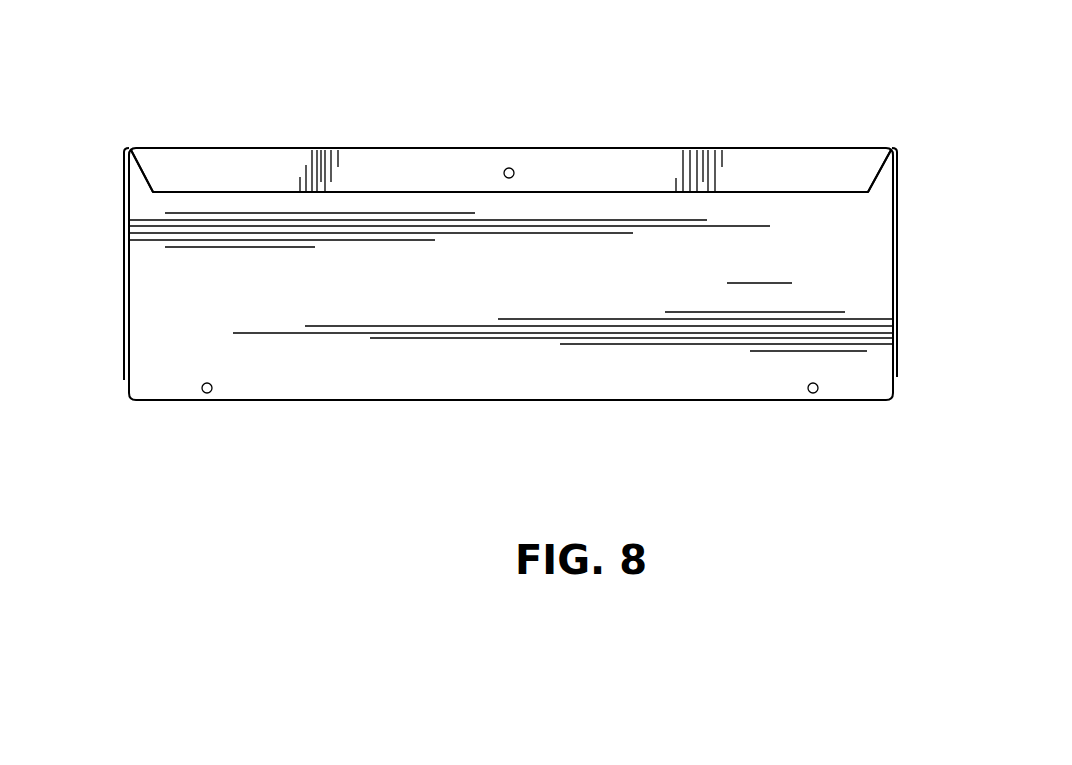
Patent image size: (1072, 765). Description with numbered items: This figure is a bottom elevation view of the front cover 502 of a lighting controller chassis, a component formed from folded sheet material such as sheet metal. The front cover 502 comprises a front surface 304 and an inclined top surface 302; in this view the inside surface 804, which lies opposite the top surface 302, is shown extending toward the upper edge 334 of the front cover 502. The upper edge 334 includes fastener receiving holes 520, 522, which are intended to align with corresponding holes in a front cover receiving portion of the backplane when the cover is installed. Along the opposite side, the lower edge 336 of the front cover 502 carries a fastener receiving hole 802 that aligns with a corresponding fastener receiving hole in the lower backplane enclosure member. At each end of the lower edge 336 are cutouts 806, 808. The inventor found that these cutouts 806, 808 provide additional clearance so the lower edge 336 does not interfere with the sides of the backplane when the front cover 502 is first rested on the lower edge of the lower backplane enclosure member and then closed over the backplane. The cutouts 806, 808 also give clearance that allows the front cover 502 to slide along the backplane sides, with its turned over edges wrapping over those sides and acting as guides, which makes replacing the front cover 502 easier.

The inclined top surface 302 is at (900, 313).
The front surface 304 is at (763, 146).
The upper edge 334 is at (700, 400).
The lower edge 336 is at (598, 170).
The front cover 502 is at (912, 157).
The fastener receiving hole 520 is at (207, 394).
The fastener receiving hole 522 is at (812, 394).
The fastener receiving hole 802 is at (509, 168).
The inside surface 804 is at (759, 268).
The cutout 806 is at (874, 178).
The cutout 808 is at (136, 187).